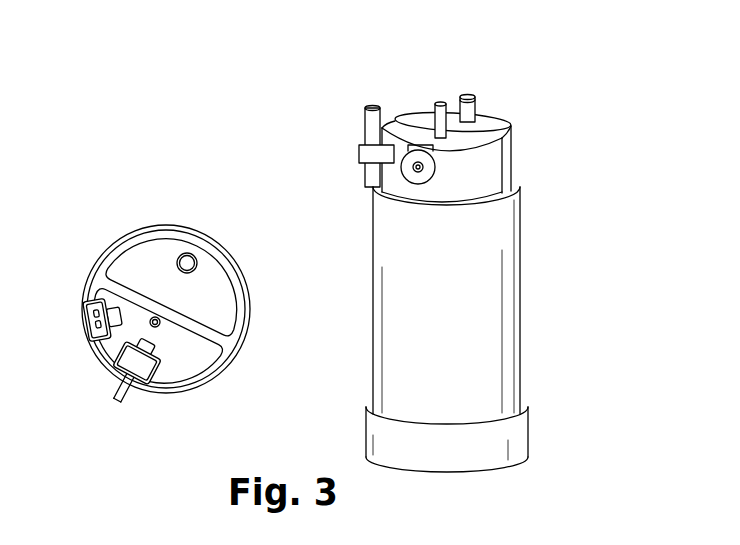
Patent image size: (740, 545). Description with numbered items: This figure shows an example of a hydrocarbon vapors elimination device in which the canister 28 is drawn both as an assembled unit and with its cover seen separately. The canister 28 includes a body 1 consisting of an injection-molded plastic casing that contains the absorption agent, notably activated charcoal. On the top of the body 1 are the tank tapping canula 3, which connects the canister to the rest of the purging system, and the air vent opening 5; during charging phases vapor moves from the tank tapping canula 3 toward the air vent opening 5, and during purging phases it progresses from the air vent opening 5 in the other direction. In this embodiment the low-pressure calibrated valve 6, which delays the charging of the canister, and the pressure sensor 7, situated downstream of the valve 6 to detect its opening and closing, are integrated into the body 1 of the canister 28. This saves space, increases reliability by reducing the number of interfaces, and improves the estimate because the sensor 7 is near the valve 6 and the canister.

The body 1 is at (233, 241).
The tank tapping canula 3 is at (434, 106).
The air vent opening 5 is at (480, 107).
The low-pressure calibrated valve 6 is at (142, 370).
The pressure sensor 7 is at (86, 323).
The canister 28 is at (388, 233).